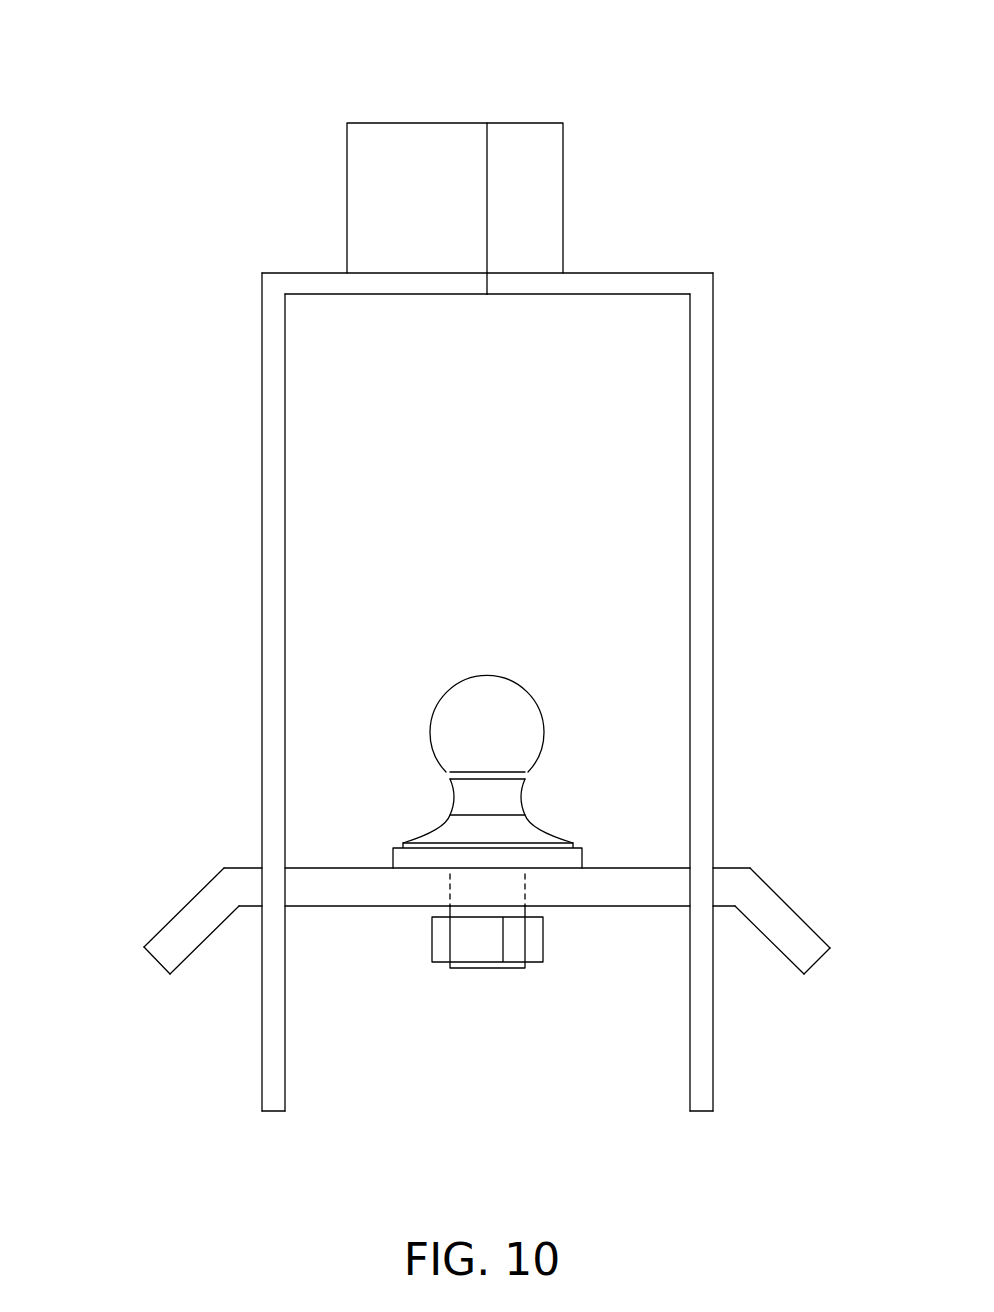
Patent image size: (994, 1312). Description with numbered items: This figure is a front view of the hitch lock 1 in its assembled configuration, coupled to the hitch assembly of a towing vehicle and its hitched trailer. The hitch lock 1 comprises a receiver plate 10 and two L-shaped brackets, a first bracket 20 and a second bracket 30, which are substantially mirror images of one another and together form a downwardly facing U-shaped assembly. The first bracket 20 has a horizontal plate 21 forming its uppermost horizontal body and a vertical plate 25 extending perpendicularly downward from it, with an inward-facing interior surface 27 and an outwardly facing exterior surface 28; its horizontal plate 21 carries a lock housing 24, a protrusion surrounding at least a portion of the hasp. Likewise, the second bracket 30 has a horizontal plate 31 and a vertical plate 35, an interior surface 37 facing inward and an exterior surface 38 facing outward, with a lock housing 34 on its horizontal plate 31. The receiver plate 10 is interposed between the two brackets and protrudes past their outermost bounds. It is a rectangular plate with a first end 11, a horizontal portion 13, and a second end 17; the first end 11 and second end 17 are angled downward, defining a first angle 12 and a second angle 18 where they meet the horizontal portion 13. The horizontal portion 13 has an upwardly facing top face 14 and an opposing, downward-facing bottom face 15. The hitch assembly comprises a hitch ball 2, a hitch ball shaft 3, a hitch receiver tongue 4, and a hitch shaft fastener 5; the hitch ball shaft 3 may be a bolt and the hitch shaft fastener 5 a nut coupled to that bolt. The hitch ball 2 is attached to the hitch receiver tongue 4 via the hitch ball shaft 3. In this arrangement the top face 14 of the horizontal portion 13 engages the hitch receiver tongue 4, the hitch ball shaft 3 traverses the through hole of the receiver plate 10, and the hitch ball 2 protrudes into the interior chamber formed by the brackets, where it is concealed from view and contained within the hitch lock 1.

The hitch lock 1 is at (757, 48).
The hitch ball 2 is at (470, 702).
The hitch ball shaft 3 is at (516, 884).
The hitch receiver tongue 4 is at (580, 856).
The hitch shaft fastener 5 is at (525, 946).
The receiver plate 10 is at (155, 893).
The first end 11 is at (160, 950).
The first angle 12 is at (232, 885).
The horizontal portion 13 is at (620, 870).
The top face 14 is at (325, 866).
The bottom face 15 is at (325, 908).
The second end 17 is at (818, 950).
The second angle 18 is at (742, 887).
The first bracket 20 is at (210, 495).
The horizontal plate 21 is at (305, 276).
The lock housing 24 is at (368, 172).
The vertical plate 25 is at (278, 1092).
The interior surface 27 is at (290, 537).
The exterior surface 28 is at (264, 606).
The second bracket 30 is at (752, 408).
The horizontal plate 31 is at (656, 276).
The lock housing 34 is at (538, 172).
The vertical plate 35 is at (700, 1092).
The interior surface 37 is at (690, 594).
The exterior surface 38 is at (712, 508).